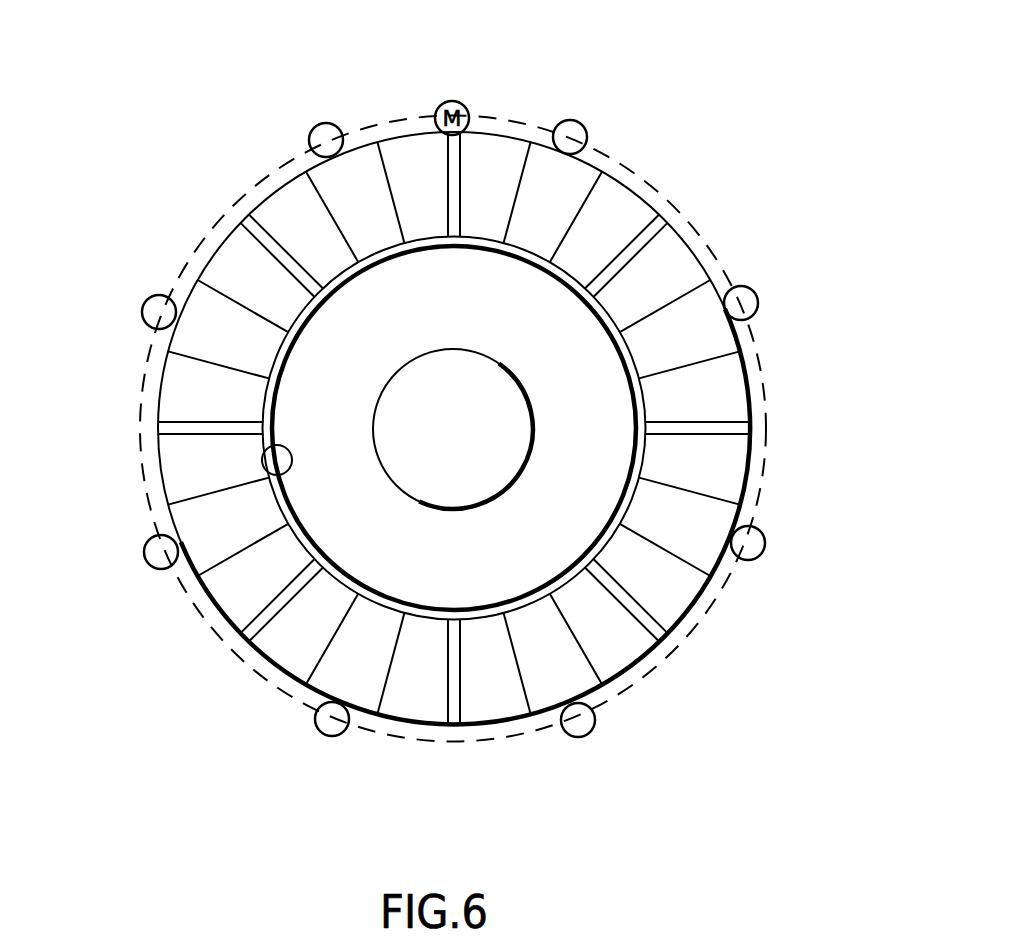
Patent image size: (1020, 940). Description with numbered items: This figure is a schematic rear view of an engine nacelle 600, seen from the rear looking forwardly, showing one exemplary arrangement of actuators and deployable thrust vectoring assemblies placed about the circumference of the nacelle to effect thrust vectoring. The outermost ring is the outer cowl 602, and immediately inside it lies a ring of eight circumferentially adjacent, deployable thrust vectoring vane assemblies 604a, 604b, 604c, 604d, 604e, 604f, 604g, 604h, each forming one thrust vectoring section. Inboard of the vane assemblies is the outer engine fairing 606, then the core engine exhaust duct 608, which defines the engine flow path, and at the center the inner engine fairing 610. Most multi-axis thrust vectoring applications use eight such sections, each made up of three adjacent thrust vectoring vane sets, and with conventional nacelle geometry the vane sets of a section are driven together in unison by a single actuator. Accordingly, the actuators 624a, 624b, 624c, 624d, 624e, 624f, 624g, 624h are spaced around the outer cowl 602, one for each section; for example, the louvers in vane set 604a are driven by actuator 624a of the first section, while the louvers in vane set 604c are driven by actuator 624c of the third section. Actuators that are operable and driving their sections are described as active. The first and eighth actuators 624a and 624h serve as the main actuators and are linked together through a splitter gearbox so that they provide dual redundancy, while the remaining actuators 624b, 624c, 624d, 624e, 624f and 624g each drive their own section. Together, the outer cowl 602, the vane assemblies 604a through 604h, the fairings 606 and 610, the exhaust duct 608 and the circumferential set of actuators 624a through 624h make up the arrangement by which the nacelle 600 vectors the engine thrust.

The engine nacelle 600 is at (758, 64).
The outer cowl 602 is at (751, 402).
The deployable thrust vectoring vane assembly 604a is at (617, 214).
The deployable thrust vectoring vane assembly 604b is at (664, 259).
The deployable thrust vectoring vane assembly 604c is at (724, 457).
The deployable thrust vectoring vane assembly 604d is at (624, 643).
The deployable thrust vectoring vane assembly 604e is at (416, 705).
The deployable thrust vectoring vane assembly 604f is at (240, 594).
The deployable thrust vectoring vane assembly 604g is at (184, 402).
The deployable thrust vectoring vane assembly 604h is at (287, 214).
The outer engine fairing 606 is at (262, 457).
The core engine exhaust duct 608 is at (430, 277).
The inner engine fairing 610 is at (471, 446).
The actuator 624a is at (567, 120).
The actuator 624b is at (758, 302).
The actuator 624c is at (765, 547).
The actuator 624d is at (573, 737).
The actuator 624e is at (322, 735).
The actuator 624f is at (149, 562).
The actuator 624g is at (146, 303).
The actuator 624h is at (330, 124).